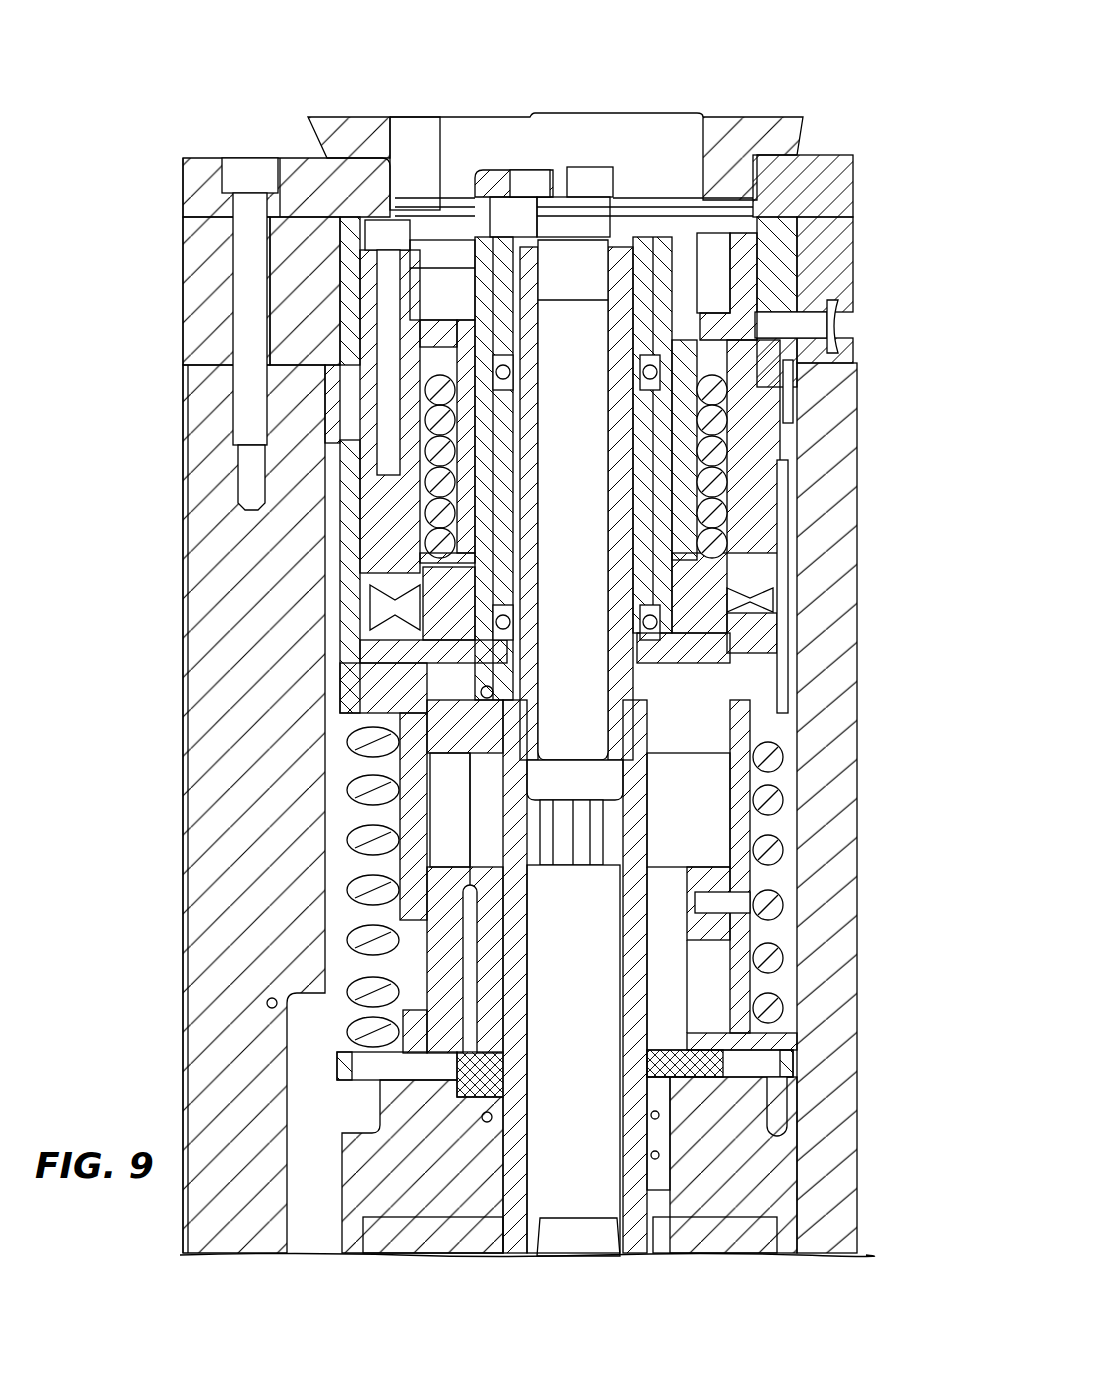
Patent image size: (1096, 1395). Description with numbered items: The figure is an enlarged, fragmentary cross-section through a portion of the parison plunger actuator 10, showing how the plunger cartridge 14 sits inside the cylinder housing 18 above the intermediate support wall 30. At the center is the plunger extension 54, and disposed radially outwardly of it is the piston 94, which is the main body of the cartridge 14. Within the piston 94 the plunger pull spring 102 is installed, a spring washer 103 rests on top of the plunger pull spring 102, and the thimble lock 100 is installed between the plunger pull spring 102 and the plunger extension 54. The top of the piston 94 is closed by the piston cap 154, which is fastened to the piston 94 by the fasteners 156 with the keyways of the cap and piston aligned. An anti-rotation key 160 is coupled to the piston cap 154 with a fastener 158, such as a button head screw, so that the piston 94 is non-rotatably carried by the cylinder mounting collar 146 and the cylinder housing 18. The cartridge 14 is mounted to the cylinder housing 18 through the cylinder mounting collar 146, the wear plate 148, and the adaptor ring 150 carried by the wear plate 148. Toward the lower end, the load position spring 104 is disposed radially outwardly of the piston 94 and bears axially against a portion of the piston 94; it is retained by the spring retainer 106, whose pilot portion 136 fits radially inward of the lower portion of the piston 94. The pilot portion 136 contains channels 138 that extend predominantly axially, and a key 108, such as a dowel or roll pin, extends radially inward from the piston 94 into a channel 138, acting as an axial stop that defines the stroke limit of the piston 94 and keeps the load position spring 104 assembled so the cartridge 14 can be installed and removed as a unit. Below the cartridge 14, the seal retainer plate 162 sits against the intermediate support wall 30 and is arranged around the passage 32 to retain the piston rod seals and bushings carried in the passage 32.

The parison plunger actuator 10 is at (170, 52).
The plunger cartridge 14 is at (345, 723).
The cylinder housing 18 is at (858, 420).
The intermediate support wall 30 is at (750, 1155).
The passage 32 is at (660, 1175).
The plunger extension 54 is at (680, 252).
The piston 94 is at (355, 557).
The thimble lock 100 is at (707, 312).
The plunger pull spring 102 is at (710, 512).
The spring washer 103 is at (728, 368).
The load position spring 104 is at (770, 853).
The spring retainer 106 is at (413, 968).
The key 108 is at (730, 903).
The pilot portion 136 is at (410, 1003).
The channel 138 is at (707, 957).
The cylinder mounting collar 146 is at (180, 318).
The wear plate 148 is at (180, 178).
The adaptor ring 150 is at (828, 102).
The piston cap 154 is at (333, 257).
The fastener 156 is at (388, 385).
The fastener 158 is at (838, 318).
The anti-rotation key 160 is at (800, 265).
The seal retainer plate 162 is at (785, 1063).